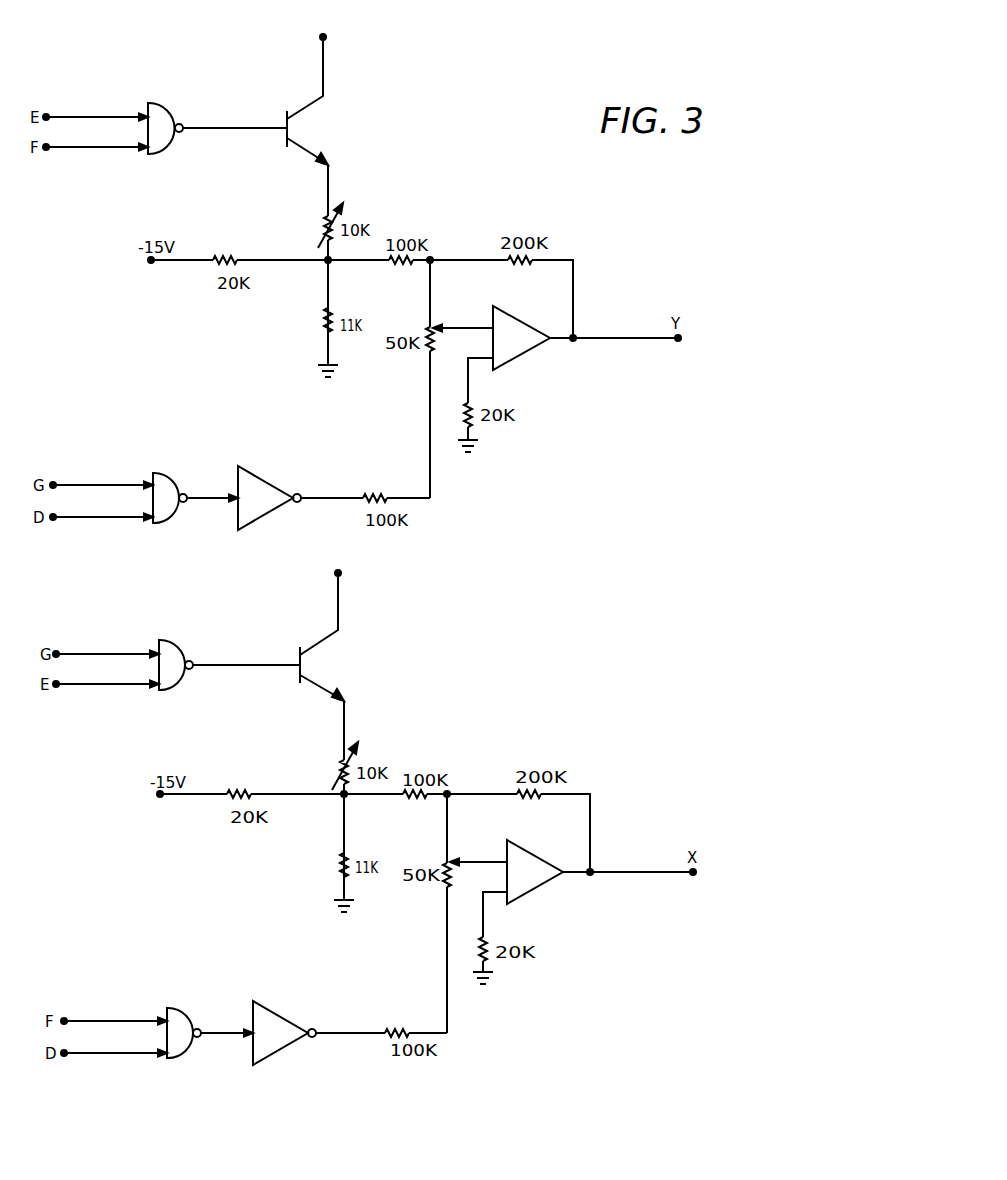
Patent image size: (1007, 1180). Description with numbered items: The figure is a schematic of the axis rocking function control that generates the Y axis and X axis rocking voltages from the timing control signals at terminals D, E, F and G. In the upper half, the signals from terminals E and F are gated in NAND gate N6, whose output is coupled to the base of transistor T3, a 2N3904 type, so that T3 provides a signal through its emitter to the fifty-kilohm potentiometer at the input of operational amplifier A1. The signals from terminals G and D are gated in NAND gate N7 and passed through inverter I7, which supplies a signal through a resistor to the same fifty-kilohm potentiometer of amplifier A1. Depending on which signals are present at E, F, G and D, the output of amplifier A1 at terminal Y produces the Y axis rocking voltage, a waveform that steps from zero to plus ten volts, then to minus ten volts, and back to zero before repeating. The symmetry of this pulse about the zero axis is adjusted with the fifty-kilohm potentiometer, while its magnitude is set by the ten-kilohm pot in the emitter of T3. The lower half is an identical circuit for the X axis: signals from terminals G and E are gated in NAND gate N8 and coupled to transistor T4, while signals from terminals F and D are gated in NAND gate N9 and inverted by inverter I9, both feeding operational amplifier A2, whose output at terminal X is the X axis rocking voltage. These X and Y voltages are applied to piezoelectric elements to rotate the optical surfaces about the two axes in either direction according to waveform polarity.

The NAND gate N6 is at (168, 121).
The transistor T3 is at (337, 91).
The NAND gate N7 is at (175, 492).
The inverter I7 is at (285, 467).
The operational amplifier A1 is at (545, 310).
The NAND gate N8 is at (173, 657).
The transistor T4 is at (352, 627).
The NAND gate N9 is at (190, 1023).
The inverter I9 is at (280, 1022).
The operational amplifier A2 is at (529, 860).